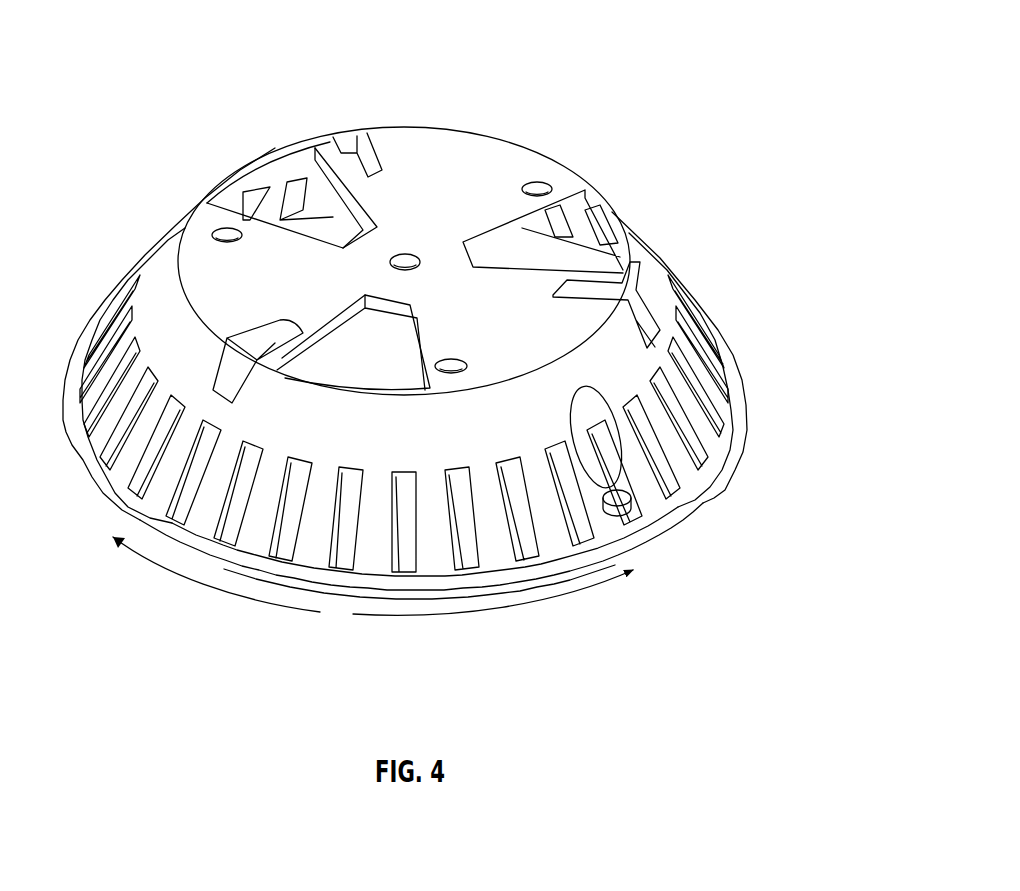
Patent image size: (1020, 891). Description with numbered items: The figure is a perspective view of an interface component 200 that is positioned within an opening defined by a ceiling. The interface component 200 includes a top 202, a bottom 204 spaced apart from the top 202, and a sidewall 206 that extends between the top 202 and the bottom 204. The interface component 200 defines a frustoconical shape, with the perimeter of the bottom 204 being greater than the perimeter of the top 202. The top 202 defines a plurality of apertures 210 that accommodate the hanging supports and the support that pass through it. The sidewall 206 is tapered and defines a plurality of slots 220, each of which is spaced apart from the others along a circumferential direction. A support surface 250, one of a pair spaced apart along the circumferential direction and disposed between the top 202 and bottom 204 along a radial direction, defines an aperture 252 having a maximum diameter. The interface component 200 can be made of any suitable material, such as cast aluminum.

The interface component 200 is at (661, 96).
The top 202 is at (452, 206).
The bottom 204 is at (735, 439).
The sidewall 206 is at (163, 317).
The apertures 210 is at (222, 229).
The slots 220 is at (182, 474).
The support surface 250 is at (633, 516).
The aperture 252 is at (603, 487).